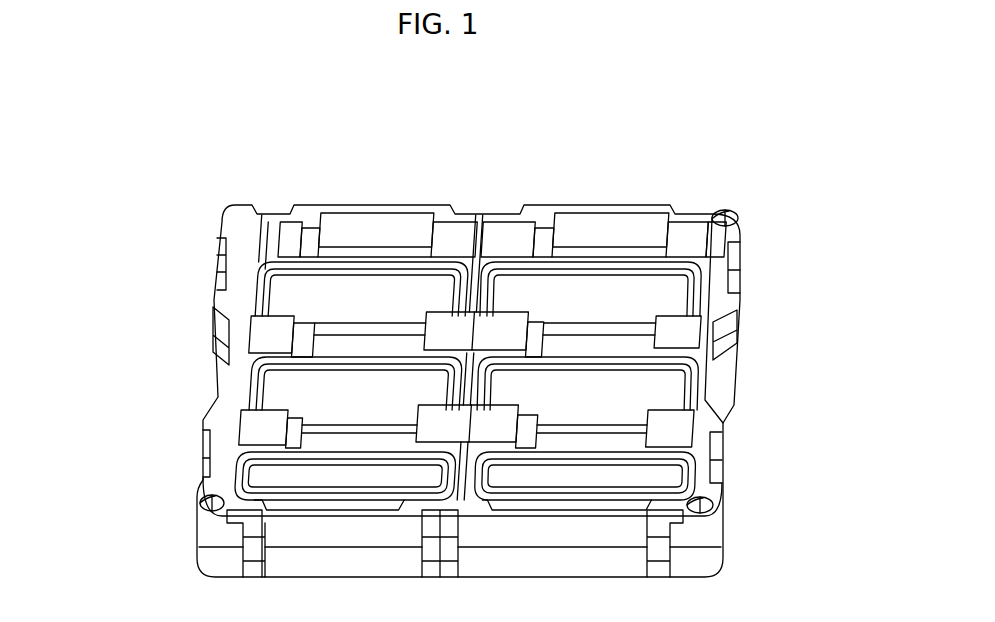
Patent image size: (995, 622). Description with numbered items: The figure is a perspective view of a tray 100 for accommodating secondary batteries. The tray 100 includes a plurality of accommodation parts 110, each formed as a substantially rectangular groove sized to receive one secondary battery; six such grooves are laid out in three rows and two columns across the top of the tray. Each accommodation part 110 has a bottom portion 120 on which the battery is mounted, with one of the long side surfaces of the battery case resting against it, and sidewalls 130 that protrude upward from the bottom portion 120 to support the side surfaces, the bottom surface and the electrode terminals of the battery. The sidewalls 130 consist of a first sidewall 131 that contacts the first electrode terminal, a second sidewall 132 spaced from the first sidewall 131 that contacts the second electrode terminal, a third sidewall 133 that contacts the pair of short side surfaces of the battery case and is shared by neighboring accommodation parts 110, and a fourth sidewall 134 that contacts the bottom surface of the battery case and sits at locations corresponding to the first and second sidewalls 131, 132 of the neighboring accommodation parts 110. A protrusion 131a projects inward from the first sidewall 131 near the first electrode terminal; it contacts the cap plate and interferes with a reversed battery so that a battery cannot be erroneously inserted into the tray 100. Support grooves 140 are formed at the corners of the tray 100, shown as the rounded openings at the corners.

The tray 100 is at (108, 100).
The accommodation part 110 is at (270, 301).
The bottom portion 120 is at (270, 385).
The sidewalls 130 is at (532, 133).
The first sidewall 131 is at (256, 250).
The protrusion 131a is at (302, 257).
The second sidewall 132 is at (451, 237).
The third sidewall 133 is at (302, 255).
The fourth sidewall 134 is at (523, 316).
The support grooves 140 is at (736, 214).